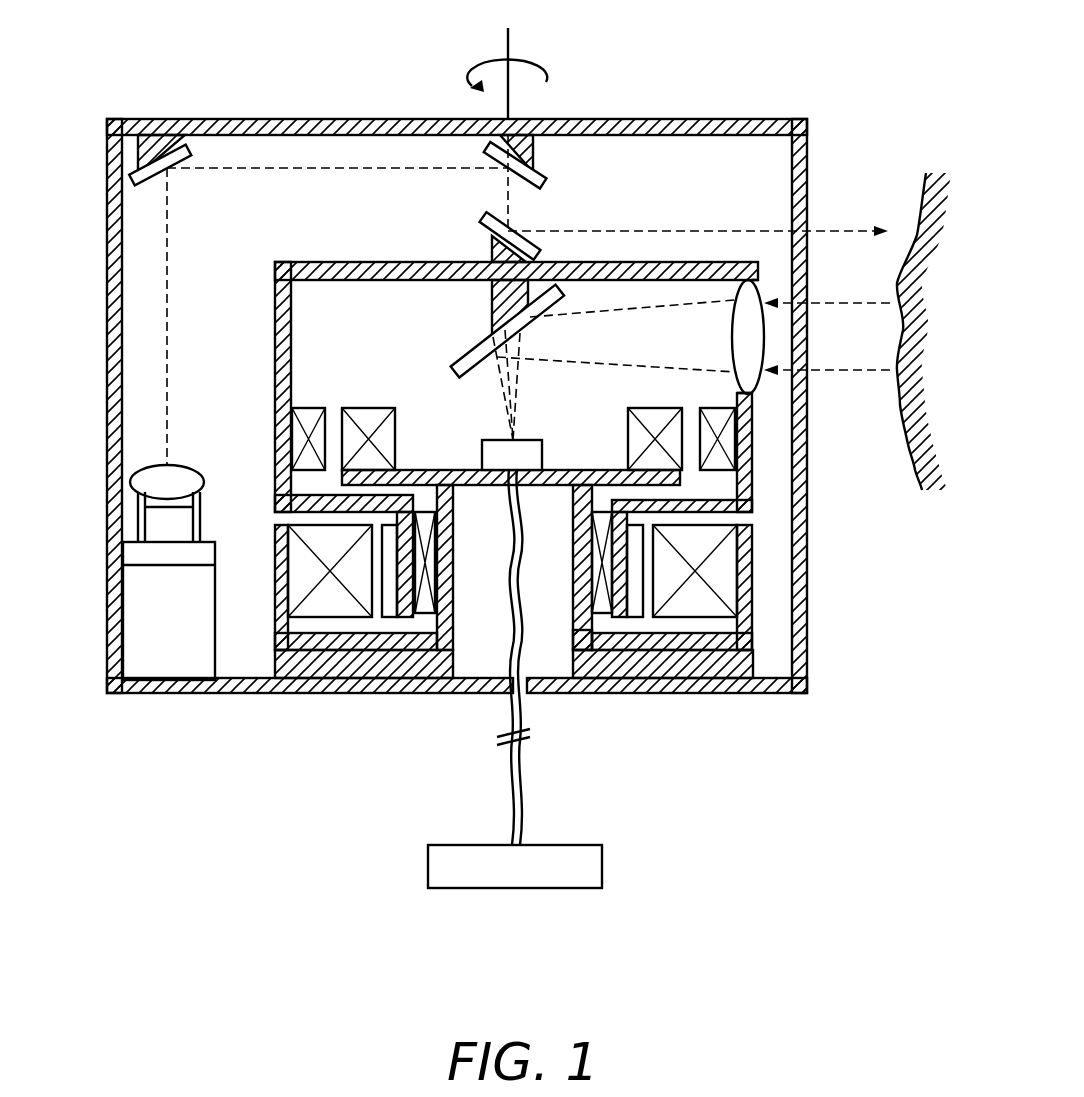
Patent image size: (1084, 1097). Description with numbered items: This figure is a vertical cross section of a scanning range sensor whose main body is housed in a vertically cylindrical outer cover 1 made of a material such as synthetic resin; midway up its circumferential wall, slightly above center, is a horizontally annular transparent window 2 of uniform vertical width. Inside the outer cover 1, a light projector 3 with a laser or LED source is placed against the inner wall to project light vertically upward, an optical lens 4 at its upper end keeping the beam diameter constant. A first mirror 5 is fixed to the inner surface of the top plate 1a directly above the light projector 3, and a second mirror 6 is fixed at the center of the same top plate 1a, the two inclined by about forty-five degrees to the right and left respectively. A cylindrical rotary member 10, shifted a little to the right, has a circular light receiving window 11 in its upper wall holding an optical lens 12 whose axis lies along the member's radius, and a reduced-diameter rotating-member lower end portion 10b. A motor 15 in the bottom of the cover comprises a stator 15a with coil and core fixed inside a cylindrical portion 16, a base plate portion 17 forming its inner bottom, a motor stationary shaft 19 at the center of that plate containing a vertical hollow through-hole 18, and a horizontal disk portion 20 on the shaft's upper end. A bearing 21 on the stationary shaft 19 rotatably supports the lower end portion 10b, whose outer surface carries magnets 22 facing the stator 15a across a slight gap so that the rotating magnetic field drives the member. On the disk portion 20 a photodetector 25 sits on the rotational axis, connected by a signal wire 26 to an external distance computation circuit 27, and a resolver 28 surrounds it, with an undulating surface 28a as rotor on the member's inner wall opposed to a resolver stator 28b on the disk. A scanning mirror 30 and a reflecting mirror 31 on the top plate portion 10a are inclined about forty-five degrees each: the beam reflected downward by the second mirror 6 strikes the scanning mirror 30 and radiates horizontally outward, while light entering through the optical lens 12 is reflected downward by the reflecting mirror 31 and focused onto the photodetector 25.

The outer cover 1 is at (462, 376).
The top plate 1a is at (370, 118).
The transparent window 2 is at (107, 222).
The light projector 3 is at (152, 680).
The optical lens 4 is at (176, 466).
The first mirror 5 is at (158, 185).
The second mirror 6 is at (530, 180).
The cylindrical rotary member 10 is at (488, 489).
The top plate portion 10a is at (357, 262).
The rotating-member lower end portion 10b is at (395, 645).
The light receiving window 11 is at (758, 285).
The optical lens 12 is at (730, 323).
The motor 15 is at (478, 632).
The stator 15a is at (300, 578).
The cylindrical portion 16 is at (282, 623).
The base plate portion 17 is at (403, 670).
The hollow through-hole 18 is at (560, 660).
The motor stationary shaft 19 is at (573, 587).
The horizontal disk portion 20 is at (578, 470).
The bearing 21 is at (423, 513).
The magnets 22 is at (388, 550).
The photodetector 25 is at (525, 440).
The signal wire 26 is at (507, 782).
The distance computation circuit 27 is at (515, 866).
The resolver 28 is at (512, 390).
The undulating surface 28a is at (327, 406).
The resolver stator 28b is at (370, 406).
The scanning mirror 30 is at (483, 222).
The reflecting mirror 31 is at (470, 360).